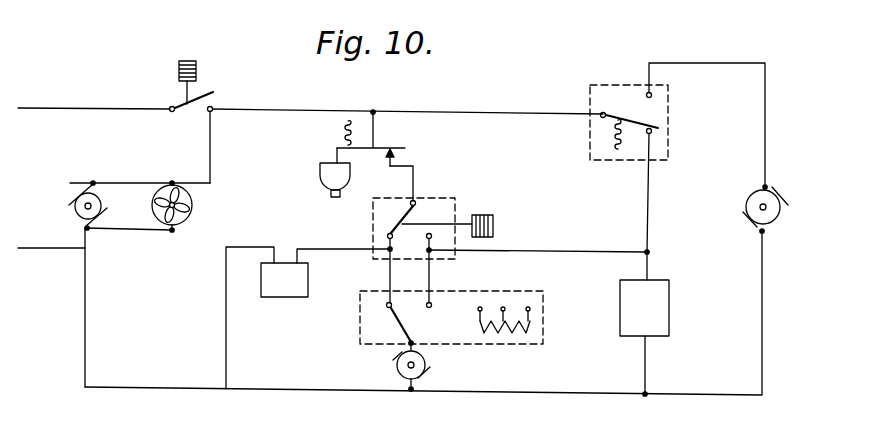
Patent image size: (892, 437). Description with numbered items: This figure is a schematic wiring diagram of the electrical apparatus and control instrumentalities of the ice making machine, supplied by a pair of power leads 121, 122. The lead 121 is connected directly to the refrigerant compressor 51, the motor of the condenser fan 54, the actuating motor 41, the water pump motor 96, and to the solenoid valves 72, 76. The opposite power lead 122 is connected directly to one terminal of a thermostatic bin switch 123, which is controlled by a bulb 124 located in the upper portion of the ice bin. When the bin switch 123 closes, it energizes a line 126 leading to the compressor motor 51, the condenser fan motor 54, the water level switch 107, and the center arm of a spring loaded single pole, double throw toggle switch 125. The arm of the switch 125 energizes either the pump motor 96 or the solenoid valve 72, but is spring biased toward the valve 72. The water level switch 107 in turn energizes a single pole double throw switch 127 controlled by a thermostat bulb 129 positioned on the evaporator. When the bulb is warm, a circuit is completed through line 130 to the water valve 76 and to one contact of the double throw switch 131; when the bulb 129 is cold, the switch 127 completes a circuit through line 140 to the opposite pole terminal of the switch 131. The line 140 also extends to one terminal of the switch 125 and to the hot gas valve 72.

The power lead 122 is at (44, 106).
The thermostatic bin switch 123 is at (193, 113).
The bulb 124 is at (176, 67).
The line 126 is at (306, 110).
The sealed compressor 51 is at (96, 190).
The condenser fan 54 is at (173, 184).
The power lead 121 is at (35, 251).
The solenoid actuated water valve 76 is at (295, 289).
The water level switch 107 is at (389, 148).
The spring loaded single pole double throw toggle switch 125 is at (320, 178).
The single pole double throw switch 127 is at (392, 227).
The line 130 is at (384, 259).
The thermostat bulb 129 is at (489, 203).
The line 140 is at (473, 252).
The double throw switch 131 is at (412, 315).
The motor 41 is at (397, 375).
The solenoid valve 72 is at (655, 316).
The circulating pump 96 is at (777, 222).